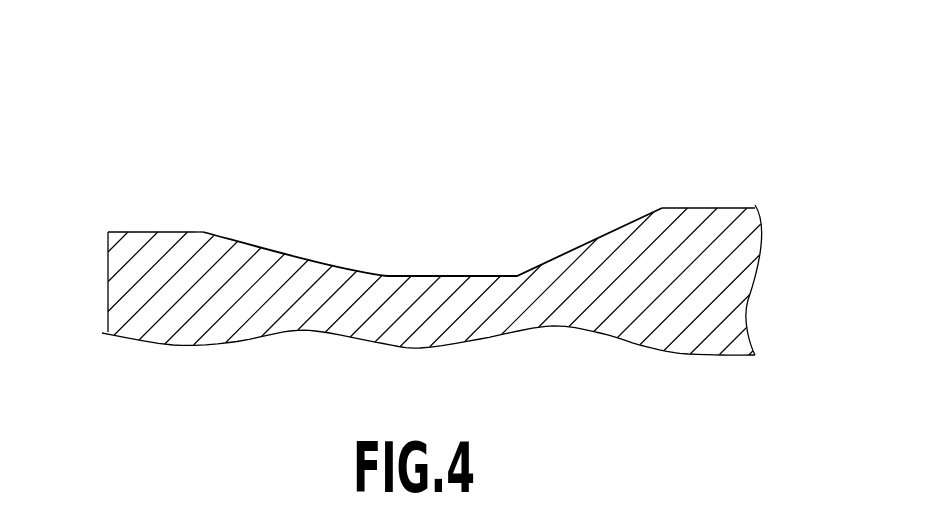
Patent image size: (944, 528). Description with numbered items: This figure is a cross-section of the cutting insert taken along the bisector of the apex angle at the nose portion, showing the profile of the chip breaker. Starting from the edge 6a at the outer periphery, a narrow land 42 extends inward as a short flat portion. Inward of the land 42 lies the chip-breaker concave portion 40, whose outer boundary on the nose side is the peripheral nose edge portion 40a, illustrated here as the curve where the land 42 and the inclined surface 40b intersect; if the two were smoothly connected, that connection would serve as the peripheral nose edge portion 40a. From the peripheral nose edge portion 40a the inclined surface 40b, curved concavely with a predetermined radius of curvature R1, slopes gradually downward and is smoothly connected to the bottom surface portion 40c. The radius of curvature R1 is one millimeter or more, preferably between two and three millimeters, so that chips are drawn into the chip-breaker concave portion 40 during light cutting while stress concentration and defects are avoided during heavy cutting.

The end face 6a is at (108, 232).
The land 42 is at (157, 232).
The peripheral nose edge portion 40a is at (203, 232).
The inclined surface 40b is at (312, 262).
The chip-breaker concave portion 40 is at (364, 270).
The bottom surface portion 40c is at (470, 276).
The radius of curvature R1 is at (289, 258).